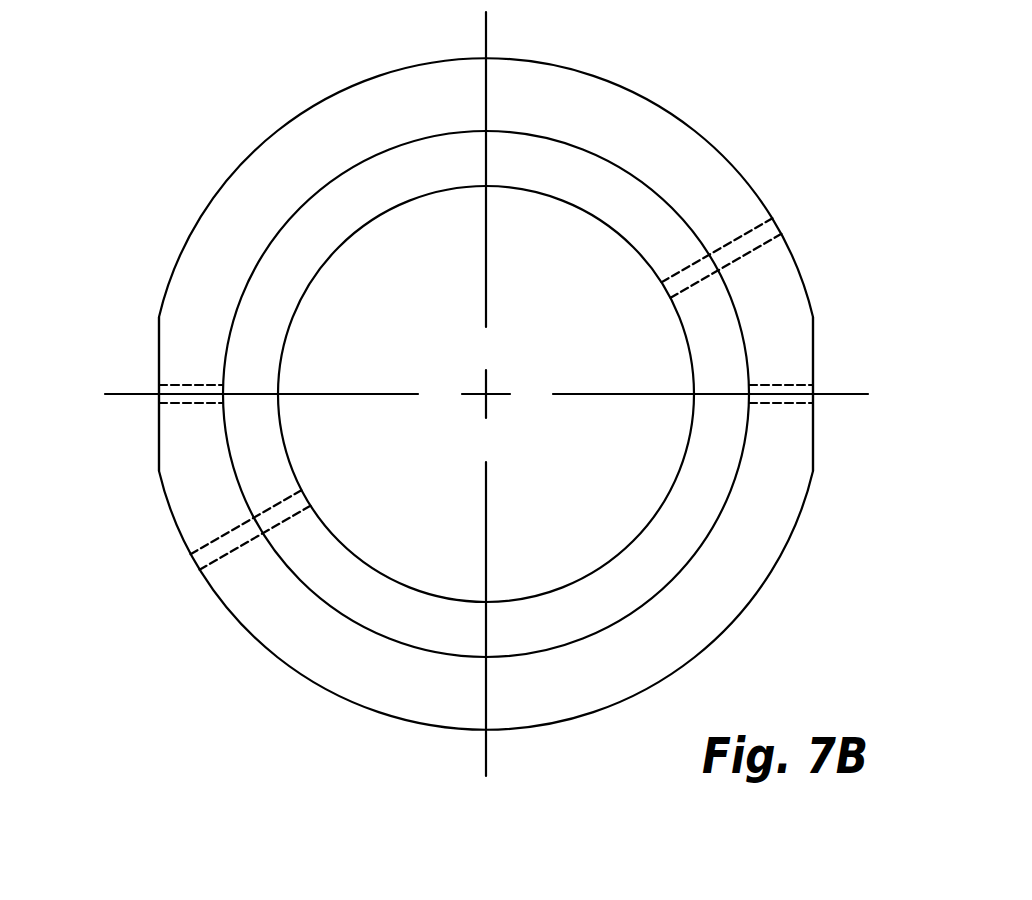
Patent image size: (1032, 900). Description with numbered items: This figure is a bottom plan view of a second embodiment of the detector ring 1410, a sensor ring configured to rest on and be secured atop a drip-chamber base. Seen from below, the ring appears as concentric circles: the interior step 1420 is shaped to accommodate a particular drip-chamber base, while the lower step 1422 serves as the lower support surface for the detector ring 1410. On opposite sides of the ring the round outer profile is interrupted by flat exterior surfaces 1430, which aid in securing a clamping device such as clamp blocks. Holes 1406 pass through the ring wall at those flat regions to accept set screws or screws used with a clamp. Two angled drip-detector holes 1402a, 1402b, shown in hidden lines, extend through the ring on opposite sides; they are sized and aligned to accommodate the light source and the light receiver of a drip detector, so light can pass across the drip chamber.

The detector ring 1410 is at (148, 106).
The interior step 1420 is at (368, 187).
The lower step 1422 is at (250, 207).
The flat exterior surfaces 1430 is at (158, 343).
The holes 1406 is at (188, 404).
The drip-detector hole 1402a is at (228, 555).
The drip-detector hole 1402b is at (745, 232).